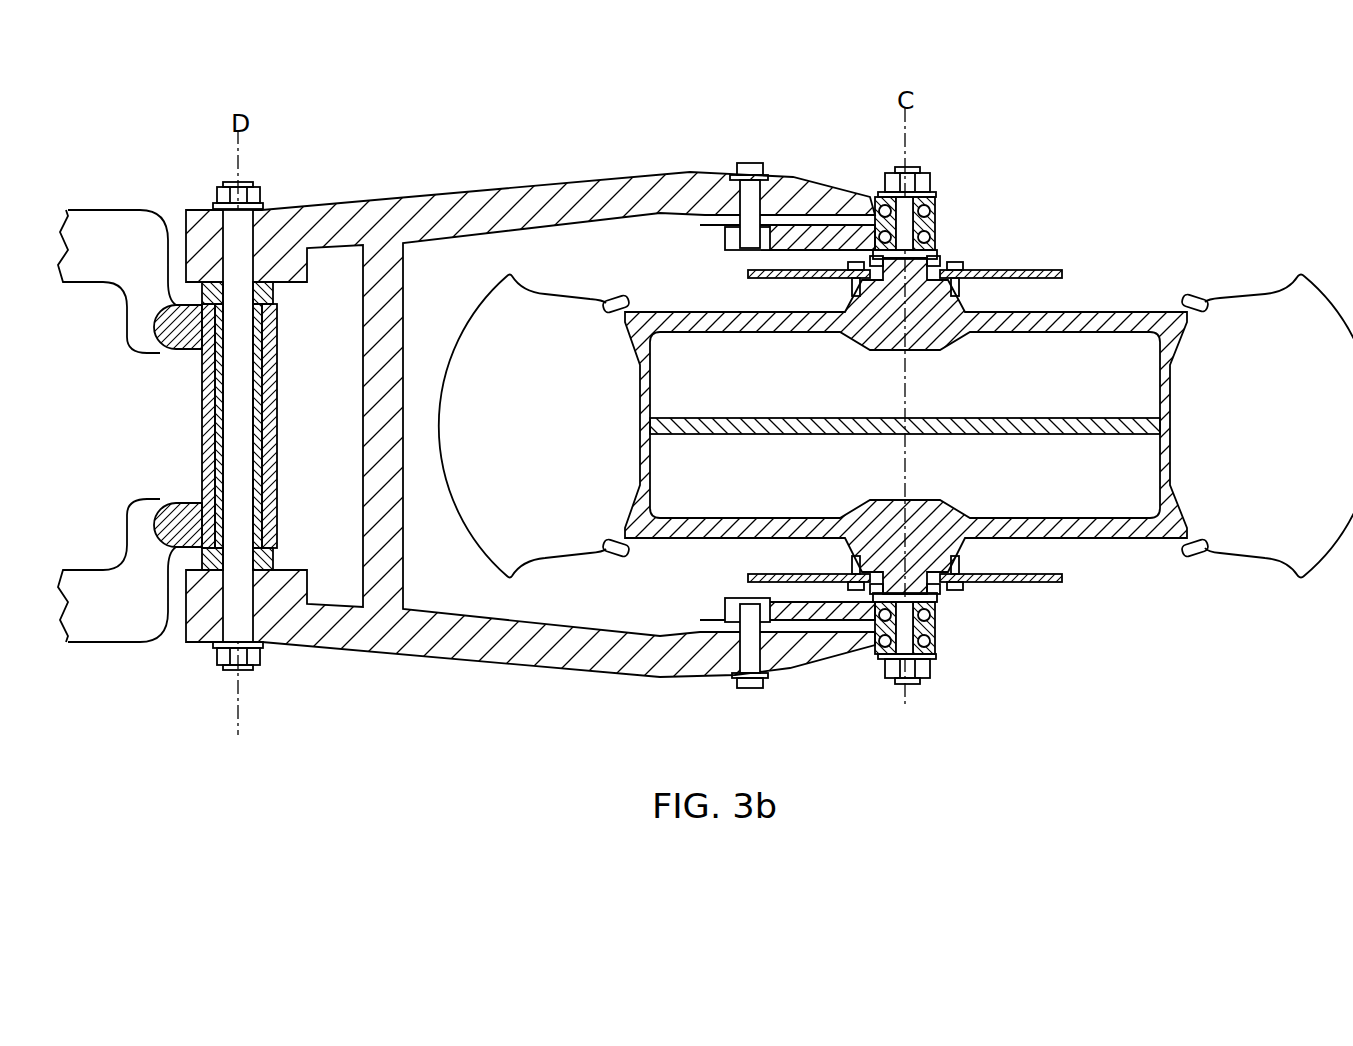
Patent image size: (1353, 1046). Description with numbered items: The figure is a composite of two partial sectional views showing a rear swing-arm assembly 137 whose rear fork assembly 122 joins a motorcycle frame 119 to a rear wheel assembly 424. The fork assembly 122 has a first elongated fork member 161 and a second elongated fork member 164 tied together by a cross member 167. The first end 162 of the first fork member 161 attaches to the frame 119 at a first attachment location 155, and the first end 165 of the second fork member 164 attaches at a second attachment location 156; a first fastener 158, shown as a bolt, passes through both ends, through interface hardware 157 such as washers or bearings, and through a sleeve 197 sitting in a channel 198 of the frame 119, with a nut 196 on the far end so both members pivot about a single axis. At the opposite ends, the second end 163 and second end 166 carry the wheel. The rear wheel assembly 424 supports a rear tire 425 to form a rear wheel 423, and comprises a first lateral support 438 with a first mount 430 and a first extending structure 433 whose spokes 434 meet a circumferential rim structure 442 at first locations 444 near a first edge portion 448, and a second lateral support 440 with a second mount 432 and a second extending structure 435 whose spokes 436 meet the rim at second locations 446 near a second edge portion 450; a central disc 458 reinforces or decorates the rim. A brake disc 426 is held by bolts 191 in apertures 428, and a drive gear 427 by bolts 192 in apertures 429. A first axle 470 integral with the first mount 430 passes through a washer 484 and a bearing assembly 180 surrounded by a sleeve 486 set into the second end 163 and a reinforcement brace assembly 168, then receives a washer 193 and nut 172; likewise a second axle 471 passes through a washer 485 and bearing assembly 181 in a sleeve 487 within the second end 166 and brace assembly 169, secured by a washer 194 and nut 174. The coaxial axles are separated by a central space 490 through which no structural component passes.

The motorcycle frame 119 is at (137, 612).
The rear fork assembly 122 is at (530, 479).
The rear swing-arm assembly 137 is at (536, 510).
The first attachment location 155 is at (142, 529).
The second attachment location 156 is at (142, 323).
The interface hardware 157 is at (166, 350).
The first fastener 158 is at (247, 670).
The first elongated fork member 161 is at (497, 652).
The first end of the first fork member 162 is at (183, 635).
The second end of the first fork member 163 is at (802, 684).
The second elongated fork member 164 is at (497, 188).
The first end of the second fork member 165 is at (186, 221).
The second end of the second fork member 166 is at (802, 169).
The cross member 167 is at (368, 432).
The reinforcement brace assembly 168 is at (777, 655).
The reinforcement brace assembly 169 is at (777, 193).
The nut 172 is at (893, 686).
The nut 174 is at (893, 168).
The bearing assembly 180 is at (875, 640).
The bearing assembly 181 is at (875, 215).
The bolts 191 is at (922, 574).
The bolts 192 is at (860, 264).
The washer 193 is at (925, 685).
The washer 194 is at (925, 167).
The nut 196 is at (222, 186).
The sleeve 197 is at (214, 425).
The channel 198 is at (205, 462).
The rear wheel 423 is at (1275, 539).
The rear wheel assembly 424 is at (1190, 542).
The rear tire 425 is at (510, 479).
The brake disc 426 is at (1055, 583).
The drive gear 427 is at (1040, 270).
The apertures 428 is at (848, 572).
The apertures 429 is at (848, 286).
The first mount 430 is at (906, 622).
The second mount 432 is at (905, 230).
The first extending structure 433 is at (905, 593).
The spokes 434 is at (780, 525).
The second extending structure 435 is at (905, 255).
The spokes 436 is at (780, 326).
The first lateral support 438 is at (928, 693).
The second lateral support 440 is at (929, 158).
The circumferential rim structure 442 is at (652, 450).
The first locations 444 is at (905, 497).
The second locations 446 is at (905, 356).
The first edge portion 448 is at (905, 575).
The second edge portion 450 is at (905, 279).
The central disc 458 is at (985, 418).
The first axle 470 is at (910, 627).
The second axle 471 is at (920, 225).
The washer 484 is at (934, 607).
The washer 485 is at (934, 245).
The sleeve 486 is at (933, 660).
The sleeve 487 is at (935, 203).
The space 490 is at (890, 402).